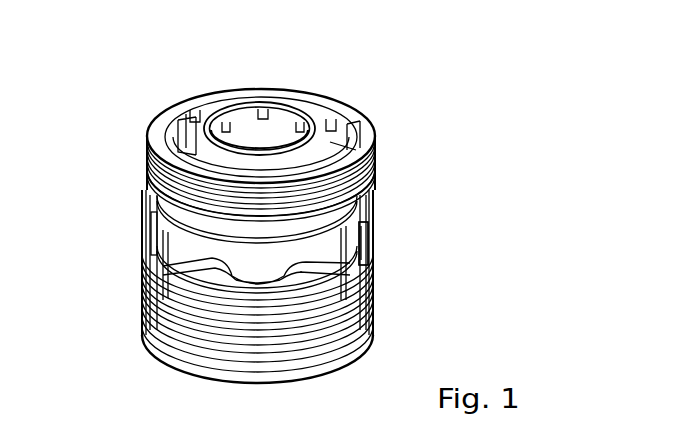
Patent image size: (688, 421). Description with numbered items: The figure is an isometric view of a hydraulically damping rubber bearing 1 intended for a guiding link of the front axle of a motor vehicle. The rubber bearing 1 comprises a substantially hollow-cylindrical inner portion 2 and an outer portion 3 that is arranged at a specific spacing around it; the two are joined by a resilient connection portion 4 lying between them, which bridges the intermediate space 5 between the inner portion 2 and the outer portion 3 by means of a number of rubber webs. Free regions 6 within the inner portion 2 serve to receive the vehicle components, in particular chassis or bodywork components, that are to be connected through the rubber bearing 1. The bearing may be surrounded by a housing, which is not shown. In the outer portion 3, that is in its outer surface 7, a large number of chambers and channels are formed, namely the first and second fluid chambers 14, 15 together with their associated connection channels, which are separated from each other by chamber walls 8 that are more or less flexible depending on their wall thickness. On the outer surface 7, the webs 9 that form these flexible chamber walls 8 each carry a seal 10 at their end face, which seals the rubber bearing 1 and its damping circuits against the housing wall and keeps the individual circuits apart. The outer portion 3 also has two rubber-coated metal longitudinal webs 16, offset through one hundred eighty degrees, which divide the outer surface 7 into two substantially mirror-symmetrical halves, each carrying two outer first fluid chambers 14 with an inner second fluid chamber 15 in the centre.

The rubber bearing 1 is at (325, 84).
The inner portion 2 is at (322, 113).
The outer portion 3 is at (163, 103).
The connection portion 4 is at (203, 139).
The intermediate space 5 is at (335, 147).
The free regions 6 is at (270, 136).
The outer surface 7 is at (150, 232).
The chamber walls 8 is at (168, 352).
The webs 9 is at (372, 256).
The seal 10 is at (363, 243).
The first fluid chambers 14 is at (372, 240).
The second fluid chambers 15 is at (180, 268).
The longitudinal webs 16 is at (152, 207).